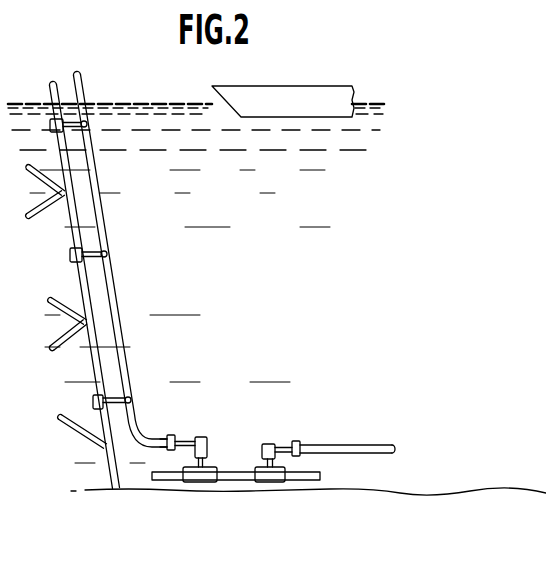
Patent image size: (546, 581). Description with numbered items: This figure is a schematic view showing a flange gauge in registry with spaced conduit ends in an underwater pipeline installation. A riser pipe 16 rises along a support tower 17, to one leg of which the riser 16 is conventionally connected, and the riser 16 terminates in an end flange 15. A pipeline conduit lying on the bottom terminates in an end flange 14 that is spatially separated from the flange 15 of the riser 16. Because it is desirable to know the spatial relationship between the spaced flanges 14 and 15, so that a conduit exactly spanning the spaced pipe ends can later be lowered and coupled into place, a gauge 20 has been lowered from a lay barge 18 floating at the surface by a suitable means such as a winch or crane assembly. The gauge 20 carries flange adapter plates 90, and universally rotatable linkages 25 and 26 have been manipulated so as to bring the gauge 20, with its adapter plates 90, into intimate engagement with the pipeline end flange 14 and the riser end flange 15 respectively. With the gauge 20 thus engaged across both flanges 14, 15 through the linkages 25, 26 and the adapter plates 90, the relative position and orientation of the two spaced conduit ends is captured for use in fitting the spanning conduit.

The end flange 14 is at (302, 443).
The end flange 15 is at (170, 435).
The riser pipe 16 is at (107, 223).
The support tower 17 is at (75, 271).
The lay barge 18 is at (304, 110).
The gauge 20 is at (234, 483).
The universally rotatable linkage 25 is at (210, 437).
The universally rotatable linkage 26 is at (258, 457).
The flange adapter plates 90 is at (177, 435).